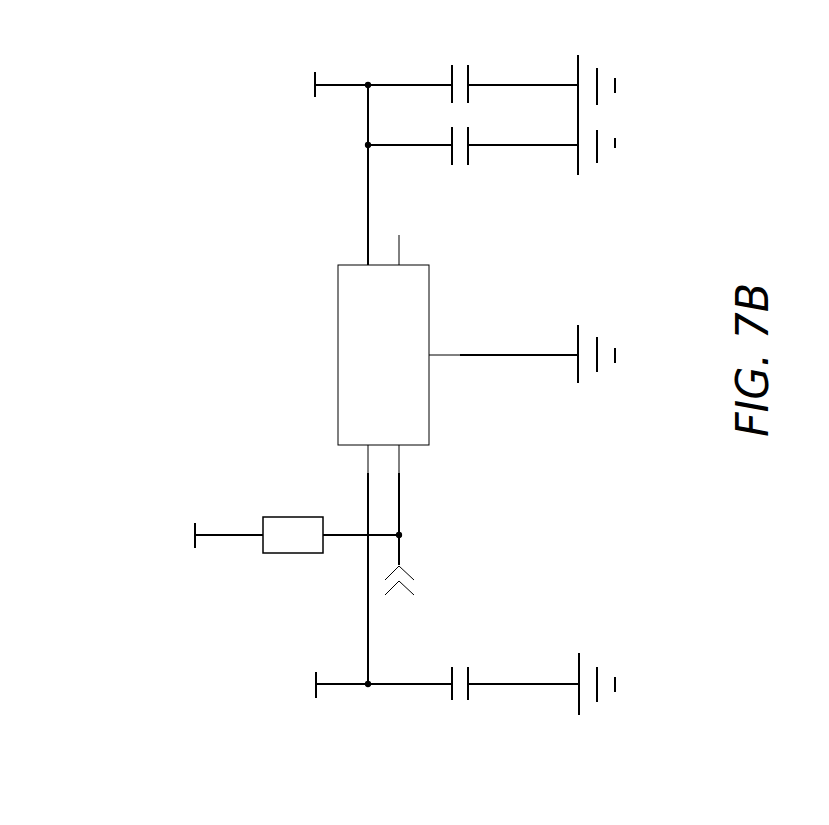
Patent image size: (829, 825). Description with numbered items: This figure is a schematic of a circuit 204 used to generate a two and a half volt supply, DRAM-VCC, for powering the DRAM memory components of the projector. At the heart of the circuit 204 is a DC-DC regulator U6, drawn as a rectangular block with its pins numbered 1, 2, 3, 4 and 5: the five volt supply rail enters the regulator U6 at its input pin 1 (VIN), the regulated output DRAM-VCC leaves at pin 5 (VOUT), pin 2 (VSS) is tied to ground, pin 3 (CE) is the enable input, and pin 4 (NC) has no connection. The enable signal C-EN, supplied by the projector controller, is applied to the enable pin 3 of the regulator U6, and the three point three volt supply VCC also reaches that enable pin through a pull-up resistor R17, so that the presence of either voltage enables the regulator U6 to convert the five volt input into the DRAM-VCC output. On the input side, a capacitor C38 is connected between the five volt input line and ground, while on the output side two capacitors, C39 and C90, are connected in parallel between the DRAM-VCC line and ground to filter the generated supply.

The circuit 204 is at (162, 353).
The VIN pin of regulator U6 1 is at (356, 564).
The VSS pin of regulator U6 2 is at (522, 354).
The CE pin of regulator U6 3 is at (393, 546).
The NC pin of regulator U6 4 is at (388, 250).
The VOUT pin of regulator U6 5 is at (357, 175).
The DC-DC regulator U6 is at (448, 384).
The pull-up resistor 10K R17 is at (293, 549).
The input capacitor 4.7uF C38 is at (468, 689).
The output capacitor 10uF C39 is at (486, 150).
The output capacitor 100nF C90 is at (469, 89).